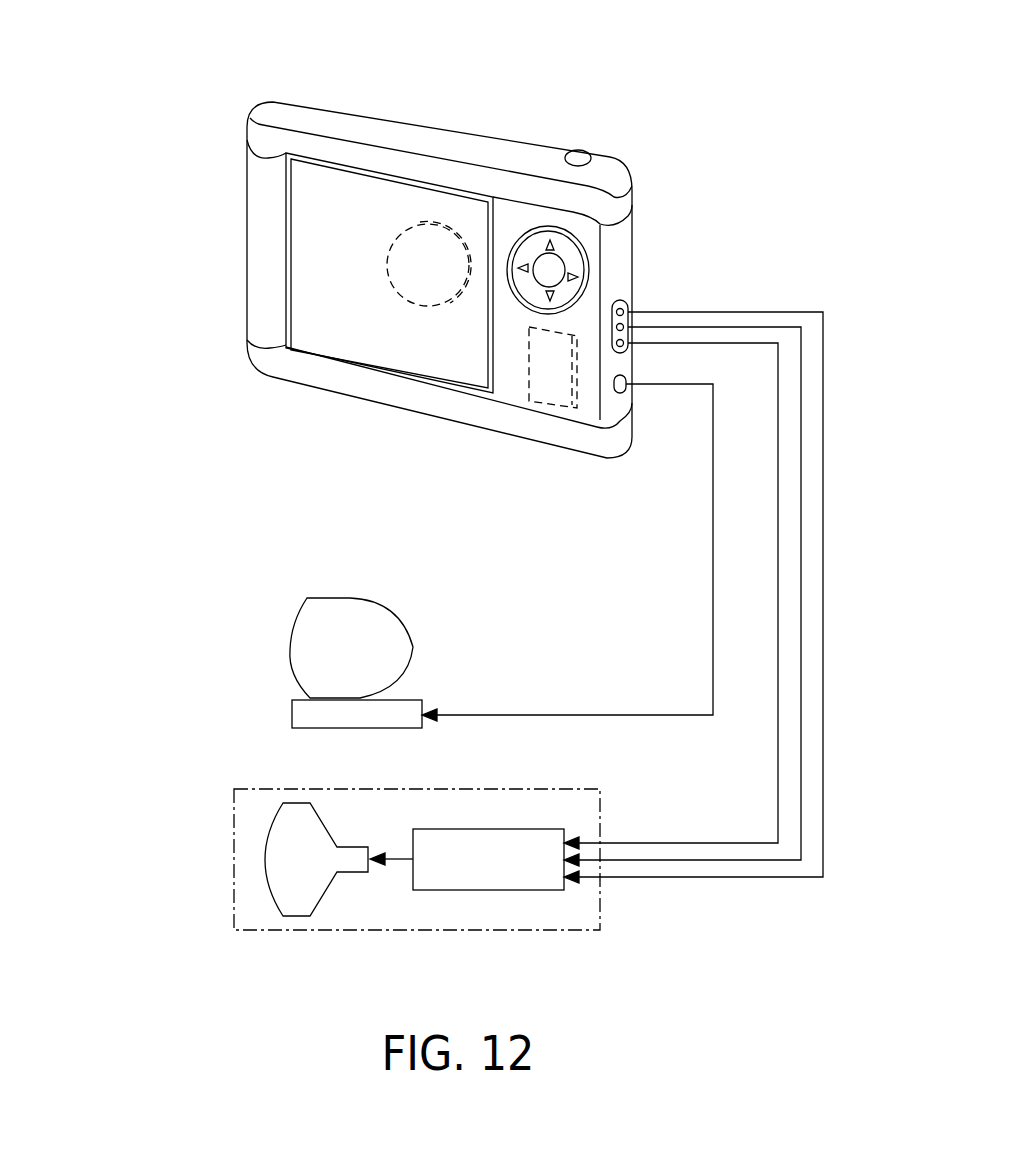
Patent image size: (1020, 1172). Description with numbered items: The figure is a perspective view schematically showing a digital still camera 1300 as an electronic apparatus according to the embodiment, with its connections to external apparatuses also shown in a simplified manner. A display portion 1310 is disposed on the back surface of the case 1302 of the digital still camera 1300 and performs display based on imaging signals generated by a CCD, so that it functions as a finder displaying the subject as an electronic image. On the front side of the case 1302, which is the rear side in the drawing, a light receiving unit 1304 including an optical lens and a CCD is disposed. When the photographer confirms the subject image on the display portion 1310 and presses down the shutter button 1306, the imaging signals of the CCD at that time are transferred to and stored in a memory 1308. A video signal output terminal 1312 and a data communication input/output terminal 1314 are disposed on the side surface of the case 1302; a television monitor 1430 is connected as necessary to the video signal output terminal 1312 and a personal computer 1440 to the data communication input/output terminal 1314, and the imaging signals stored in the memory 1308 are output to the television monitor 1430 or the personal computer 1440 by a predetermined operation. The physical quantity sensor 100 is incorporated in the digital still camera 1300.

The physical quantity sensor 100 is at (513, 374).
The digital still camera 1300 is at (540, 83).
The case 1302 is at (263, 138).
The light receiving unit 1304 is at (432, 222).
The shutter button 1306 is at (583, 151).
The memory 1308 is at (552, 392).
The display portion 1310 is at (365, 341).
The video signal output terminal 1312 is at (623, 302).
The data communication input/output terminal 1314 is at (623, 392).
The television monitor 1430 is at (233, 860).
The personal computer 1440 is at (292, 630).